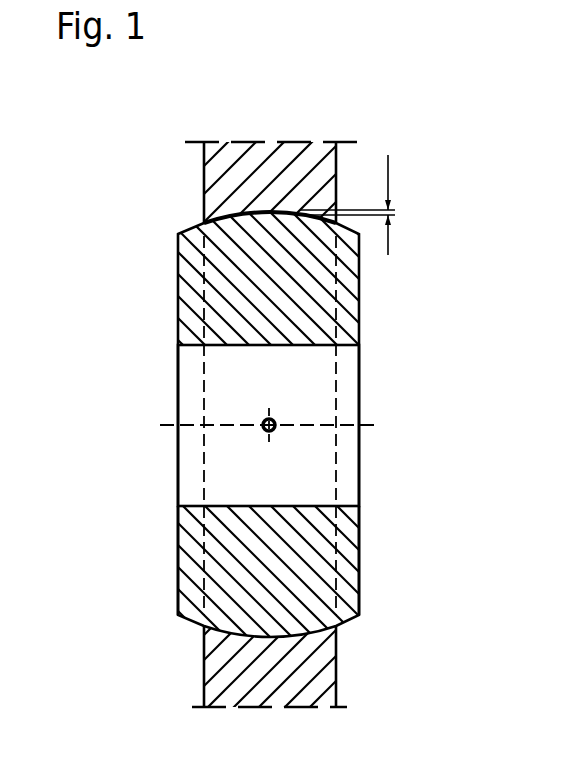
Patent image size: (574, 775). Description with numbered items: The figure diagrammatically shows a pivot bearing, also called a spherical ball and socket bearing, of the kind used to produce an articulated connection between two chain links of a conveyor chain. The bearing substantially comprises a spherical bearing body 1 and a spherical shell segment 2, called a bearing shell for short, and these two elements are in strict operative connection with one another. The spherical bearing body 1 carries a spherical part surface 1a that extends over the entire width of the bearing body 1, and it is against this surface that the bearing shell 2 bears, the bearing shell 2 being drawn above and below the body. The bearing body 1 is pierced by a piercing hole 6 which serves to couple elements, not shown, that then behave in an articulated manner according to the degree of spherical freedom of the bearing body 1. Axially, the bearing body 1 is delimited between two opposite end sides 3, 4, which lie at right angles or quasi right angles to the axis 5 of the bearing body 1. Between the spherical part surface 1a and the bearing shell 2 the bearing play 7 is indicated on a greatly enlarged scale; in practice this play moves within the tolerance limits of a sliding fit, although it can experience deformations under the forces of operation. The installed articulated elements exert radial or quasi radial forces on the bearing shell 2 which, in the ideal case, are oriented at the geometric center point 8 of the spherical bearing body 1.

The spherical bearing body 1 is at (313, 280).
The spherical part surface 1a is at (203, 227).
The spherical shell segment 2 is at (227, 172).
The end side 3 is at (359, 563).
The end side 4 is at (178, 563).
The axis 5 is at (170, 425).
The piercing hole 6 is at (297, 398).
The bearing play 7 is at (388, 177).
The geometric center point 8 is at (263, 427).